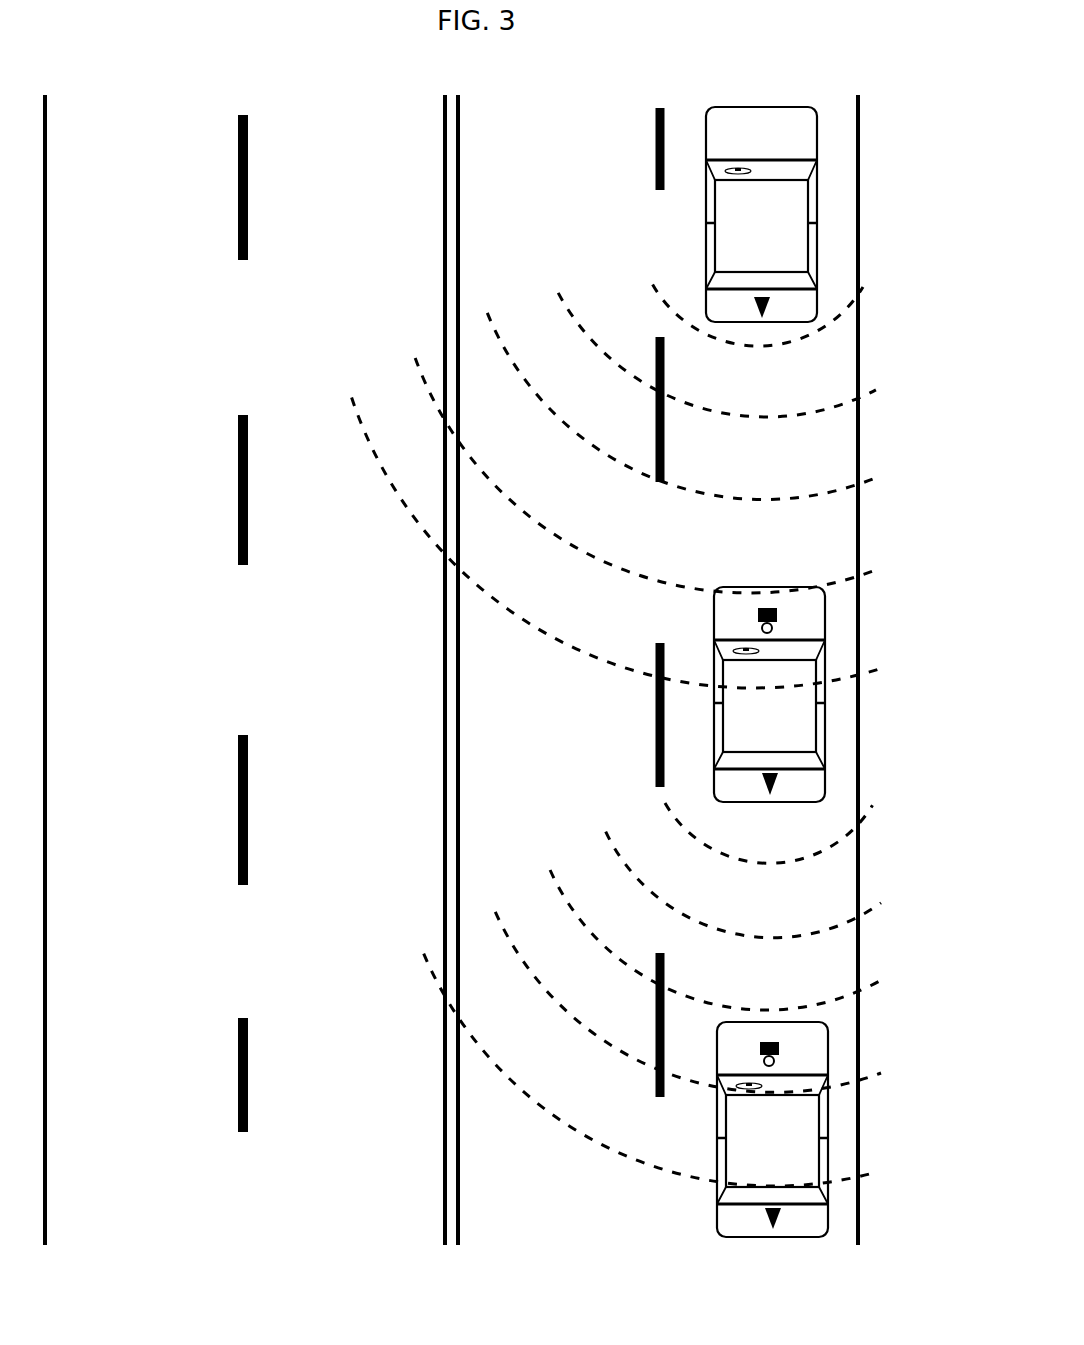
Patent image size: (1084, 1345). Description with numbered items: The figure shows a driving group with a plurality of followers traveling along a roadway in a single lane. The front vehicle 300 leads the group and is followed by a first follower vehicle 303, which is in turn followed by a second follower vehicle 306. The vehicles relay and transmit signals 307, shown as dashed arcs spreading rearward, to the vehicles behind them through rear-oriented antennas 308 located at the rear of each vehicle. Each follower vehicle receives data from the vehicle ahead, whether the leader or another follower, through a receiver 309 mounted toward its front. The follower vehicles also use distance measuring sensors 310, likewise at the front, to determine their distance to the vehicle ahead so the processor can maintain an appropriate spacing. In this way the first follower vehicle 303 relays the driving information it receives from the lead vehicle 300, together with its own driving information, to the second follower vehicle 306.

The first vehicle 300 is at (761, 214).
The first follower vehicle 303 is at (769, 694).
The second follower vehicle 306 is at (772, 1129).
The signals 307 is at (903, 670).
The rear-oriented antenna 308 is at (768, 307).
The receiver 309 is at (773, 628).
The distance measuring sensor 310 is at (777, 613).